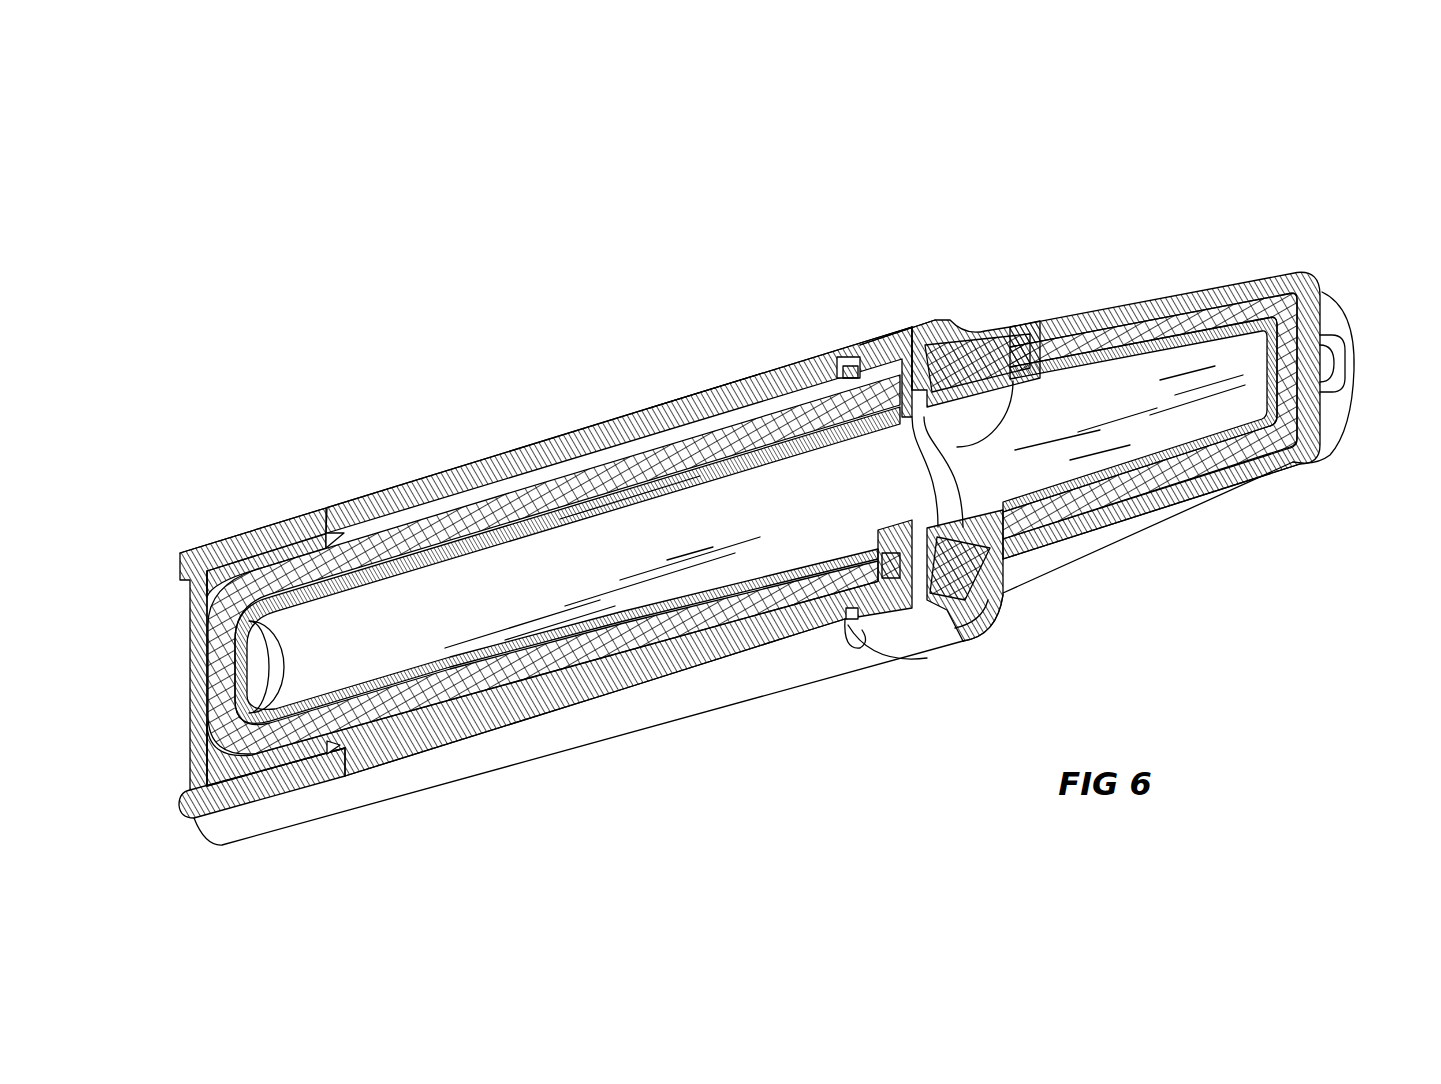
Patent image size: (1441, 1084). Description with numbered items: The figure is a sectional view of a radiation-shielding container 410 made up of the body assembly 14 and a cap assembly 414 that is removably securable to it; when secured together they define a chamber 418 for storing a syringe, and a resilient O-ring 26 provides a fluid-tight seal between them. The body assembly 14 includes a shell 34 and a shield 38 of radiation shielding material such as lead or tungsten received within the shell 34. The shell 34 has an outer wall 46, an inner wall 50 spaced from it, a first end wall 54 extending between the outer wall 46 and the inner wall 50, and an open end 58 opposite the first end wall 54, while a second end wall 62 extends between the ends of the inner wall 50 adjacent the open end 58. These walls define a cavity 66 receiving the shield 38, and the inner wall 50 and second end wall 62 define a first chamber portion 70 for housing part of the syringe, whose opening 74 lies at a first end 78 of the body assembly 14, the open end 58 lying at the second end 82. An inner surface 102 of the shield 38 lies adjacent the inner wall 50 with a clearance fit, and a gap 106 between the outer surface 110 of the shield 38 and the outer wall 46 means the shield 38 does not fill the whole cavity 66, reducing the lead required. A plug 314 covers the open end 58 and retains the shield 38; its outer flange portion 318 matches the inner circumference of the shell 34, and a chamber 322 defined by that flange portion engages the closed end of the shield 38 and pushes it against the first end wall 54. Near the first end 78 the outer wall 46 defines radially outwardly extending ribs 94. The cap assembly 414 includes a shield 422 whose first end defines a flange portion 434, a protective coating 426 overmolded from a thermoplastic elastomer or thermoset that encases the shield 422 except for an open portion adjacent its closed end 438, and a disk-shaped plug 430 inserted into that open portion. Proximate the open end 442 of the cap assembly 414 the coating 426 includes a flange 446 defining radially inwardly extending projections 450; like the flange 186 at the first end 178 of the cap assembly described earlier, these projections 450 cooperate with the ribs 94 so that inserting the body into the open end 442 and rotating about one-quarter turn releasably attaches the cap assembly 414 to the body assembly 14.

The body assembly 14 is at (387, 437).
The O-ring 26 is at (836, 356).
The shell 34 is at (589, 442).
The shield 38 is at (555, 486).
The outer wall 46 is at (751, 490).
The inner wall 50 is at (586, 522).
The first end wall 54 is at (897, 440).
The open end 58 is at (166, 786).
The second end wall 62 is at (284, 664).
The cavity 66 is at (347, 740).
The first chamber portion 70 is at (513, 695).
The opening 74 is at (1004, 598).
The first end 78 is at (876, 526).
The second end 82 is at (202, 505).
The ribs 94 is at (850, 360).
The inner surface 102 is at (366, 588).
The gap 106 is at (583, 645).
The outer surface 110 is at (407, 718).
The first end 178 is at (902, 678).
The flange 186 is at (912, 642).
The plug 314 is at (186, 692).
The outer flange portion 318 is at (262, 528).
The chamber 322 is at (208, 626).
The container 410 is at (672, 234).
The cap assembly 414 is at (1116, 246).
The chamber 418 is at (713, 402).
The shield 422 is at (1216, 300).
The protective coating 426 is at (1237, 477).
The plug 430 is at (1331, 352).
The flange portion 434 is at (947, 340).
The closed end 438 is at (1345, 447).
The open end 442 is at (1007, 400).
The flange 446 is at (903, 348).
The projections 450 is at (928, 318).